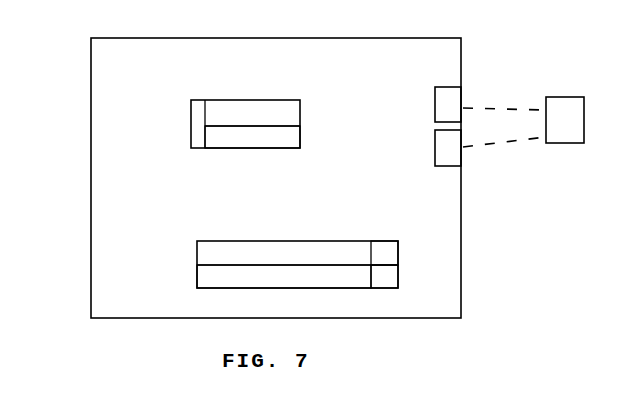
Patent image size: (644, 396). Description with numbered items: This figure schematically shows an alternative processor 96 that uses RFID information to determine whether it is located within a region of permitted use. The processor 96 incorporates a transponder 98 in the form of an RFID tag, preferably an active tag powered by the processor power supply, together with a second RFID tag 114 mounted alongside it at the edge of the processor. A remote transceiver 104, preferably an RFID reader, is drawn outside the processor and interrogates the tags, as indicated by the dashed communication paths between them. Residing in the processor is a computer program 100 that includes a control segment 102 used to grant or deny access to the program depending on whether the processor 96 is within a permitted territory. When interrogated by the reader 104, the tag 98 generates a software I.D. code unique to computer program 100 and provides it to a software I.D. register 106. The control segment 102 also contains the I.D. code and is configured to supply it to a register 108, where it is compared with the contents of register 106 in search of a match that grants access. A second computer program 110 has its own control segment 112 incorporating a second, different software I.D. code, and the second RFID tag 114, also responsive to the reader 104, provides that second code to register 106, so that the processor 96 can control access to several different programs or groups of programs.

The processor 96 is at (104, 75).
The transponder 98 is at (455, 101).
The computer program 100 is at (308, 247).
The control segment 102 is at (383, 244).
The remote transceiver 104 is at (563, 138).
The software I.D. register 106 is at (234, 103).
The register 108 is at (293, 139).
The second computer program 110 is at (243, 277).
The control segment 112 is at (378, 281).
The second RFID tag 114 is at (453, 157).